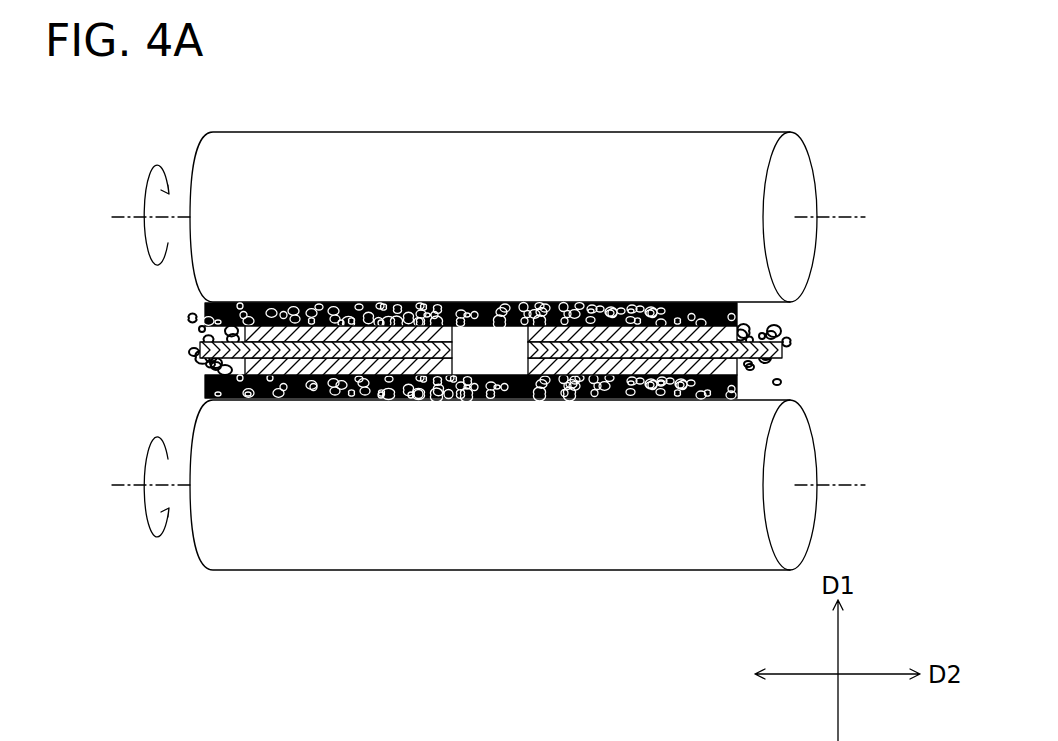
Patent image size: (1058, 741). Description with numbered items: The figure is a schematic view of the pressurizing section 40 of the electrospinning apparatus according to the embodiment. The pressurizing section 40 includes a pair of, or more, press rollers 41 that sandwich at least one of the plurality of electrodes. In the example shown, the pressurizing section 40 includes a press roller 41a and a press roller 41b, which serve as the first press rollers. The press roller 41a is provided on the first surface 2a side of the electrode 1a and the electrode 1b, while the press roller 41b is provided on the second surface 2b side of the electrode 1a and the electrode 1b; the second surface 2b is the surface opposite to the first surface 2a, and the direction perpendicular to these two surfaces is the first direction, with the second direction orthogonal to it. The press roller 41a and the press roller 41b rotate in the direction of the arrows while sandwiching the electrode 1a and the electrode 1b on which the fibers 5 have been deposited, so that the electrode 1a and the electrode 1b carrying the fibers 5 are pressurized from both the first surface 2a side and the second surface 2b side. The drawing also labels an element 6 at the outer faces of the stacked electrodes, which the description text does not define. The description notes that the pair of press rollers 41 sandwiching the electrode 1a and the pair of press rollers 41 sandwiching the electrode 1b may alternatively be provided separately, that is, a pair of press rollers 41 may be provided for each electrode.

The pressurizing section 40 is at (857, 87).
The press rollers 41 is at (842, 164).
The press roller 41a is at (800, 252).
The press roller 41b is at (795, 520).
The electrode 1a is at (177, 357).
The electrode 1b is at (813, 345).
The first surface 2a is at (393, 325).
The second surface 2b is at (410, 385).
The fibers 5 is at (200, 322).
The porous fiber layer 6 is at (197, 315).